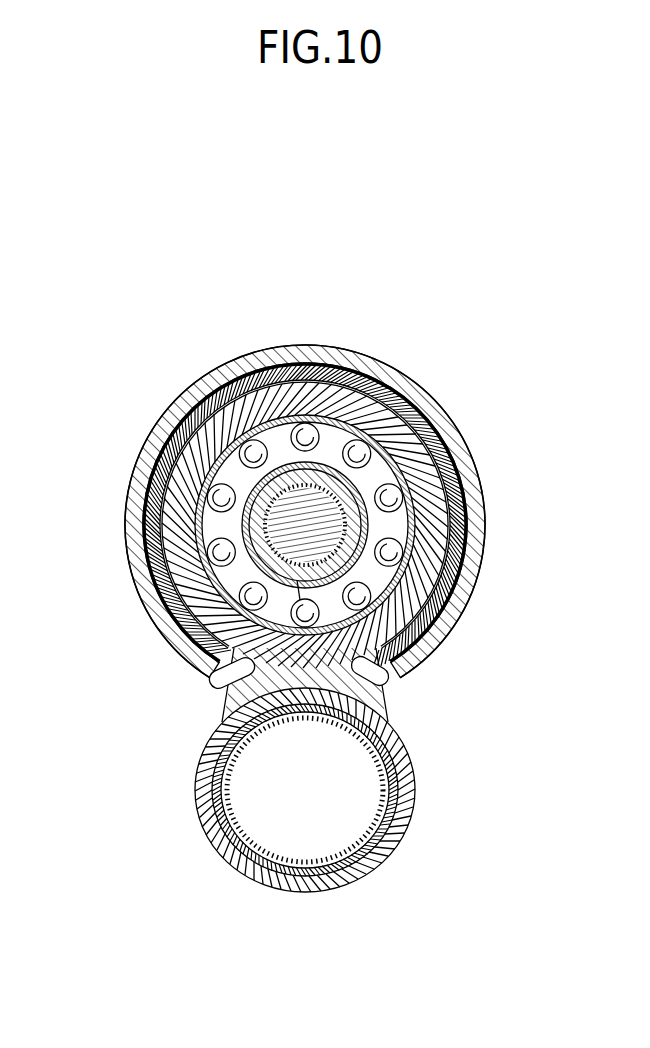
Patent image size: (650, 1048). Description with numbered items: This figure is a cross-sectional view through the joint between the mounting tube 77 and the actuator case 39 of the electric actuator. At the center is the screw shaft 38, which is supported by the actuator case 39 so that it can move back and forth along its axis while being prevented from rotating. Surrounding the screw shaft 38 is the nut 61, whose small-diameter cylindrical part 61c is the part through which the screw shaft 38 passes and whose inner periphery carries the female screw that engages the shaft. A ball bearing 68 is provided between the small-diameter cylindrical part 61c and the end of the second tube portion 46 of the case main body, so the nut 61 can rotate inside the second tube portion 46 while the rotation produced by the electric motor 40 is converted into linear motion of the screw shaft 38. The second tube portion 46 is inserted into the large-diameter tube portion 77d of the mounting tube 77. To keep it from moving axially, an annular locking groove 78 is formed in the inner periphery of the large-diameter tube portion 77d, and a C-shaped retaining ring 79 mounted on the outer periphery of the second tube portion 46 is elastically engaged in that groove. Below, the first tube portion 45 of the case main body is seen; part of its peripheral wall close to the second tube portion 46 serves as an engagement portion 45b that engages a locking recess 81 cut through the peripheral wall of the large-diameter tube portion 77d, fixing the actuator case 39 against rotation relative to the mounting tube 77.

The mounting tube 77 is at (160, 396).
The large-diameter tube portion 77d is at (285, 343).
The ball bearing 68 is at (310, 440).
The second tube portion 46 is at (392, 420).
The annular locking groove 78 is at (155, 442).
The C-shaped retaining ring 79 is at (145, 557).
The screw shaft 38 is at (368, 570).
The nut 61 is at (395, 592).
The engagement portion 45b is at (215, 672).
The small-diameter cylindrical part 61c is at (297, 580).
The locking recess 81 is at (352, 700).
The electric motor 40 is at (319, 803).
The actuator case 39 is at (425, 760).
The first tube portion 45 is at (212, 815).